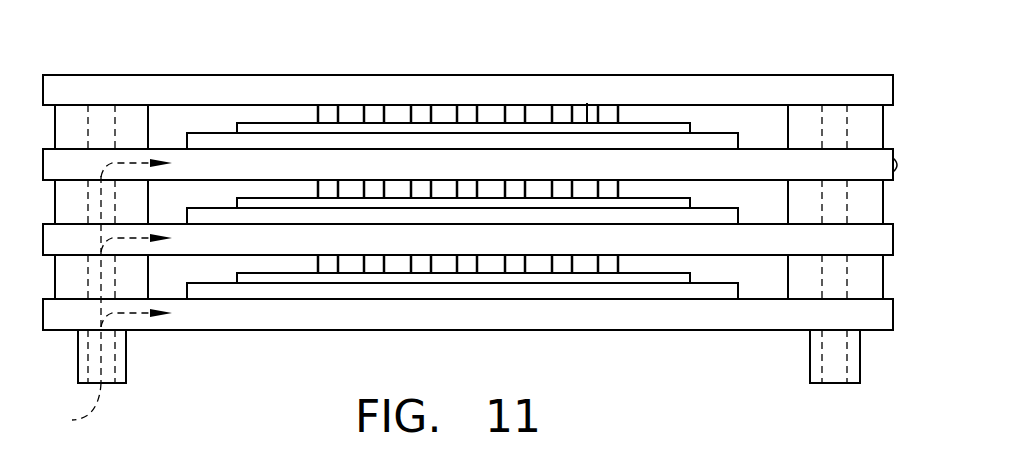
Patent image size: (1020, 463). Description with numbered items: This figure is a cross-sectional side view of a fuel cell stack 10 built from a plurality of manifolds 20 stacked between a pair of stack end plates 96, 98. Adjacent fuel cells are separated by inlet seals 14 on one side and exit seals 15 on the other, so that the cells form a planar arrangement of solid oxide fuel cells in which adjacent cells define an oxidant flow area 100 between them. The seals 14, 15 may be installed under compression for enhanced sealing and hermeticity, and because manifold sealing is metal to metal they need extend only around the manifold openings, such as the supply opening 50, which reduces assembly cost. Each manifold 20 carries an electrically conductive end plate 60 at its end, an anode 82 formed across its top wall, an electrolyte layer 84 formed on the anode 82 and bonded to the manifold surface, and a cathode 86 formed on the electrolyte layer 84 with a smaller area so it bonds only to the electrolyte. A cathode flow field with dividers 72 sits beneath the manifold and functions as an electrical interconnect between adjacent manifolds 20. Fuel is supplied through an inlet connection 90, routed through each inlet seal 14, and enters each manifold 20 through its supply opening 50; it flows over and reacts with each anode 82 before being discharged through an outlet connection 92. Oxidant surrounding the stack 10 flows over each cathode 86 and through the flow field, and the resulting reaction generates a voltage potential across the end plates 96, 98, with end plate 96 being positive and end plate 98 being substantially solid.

The fuel cell stack 10 is at (125, 65).
The inlet seal 14 is at (132, 127).
The exit seal 15 is at (803, 192).
The manifold 20 is at (236, 177).
The supply opening 50 is at (108, 333).
The end plate 60 is at (893, 165).
The divider 72 is at (608, 108).
The anode 82 is at (441, 143).
The electrolyte layer 84 is at (713, 132).
The cathode 86 is at (587, 103).
The inlet connection 90 is at (108, 385).
The outlet connection 92 is at (828, 383).
The end plate 96 is at (876, 322).
The end plate 98 is at (867, 84).
The oxidant flow area 100 is at (762, 120).